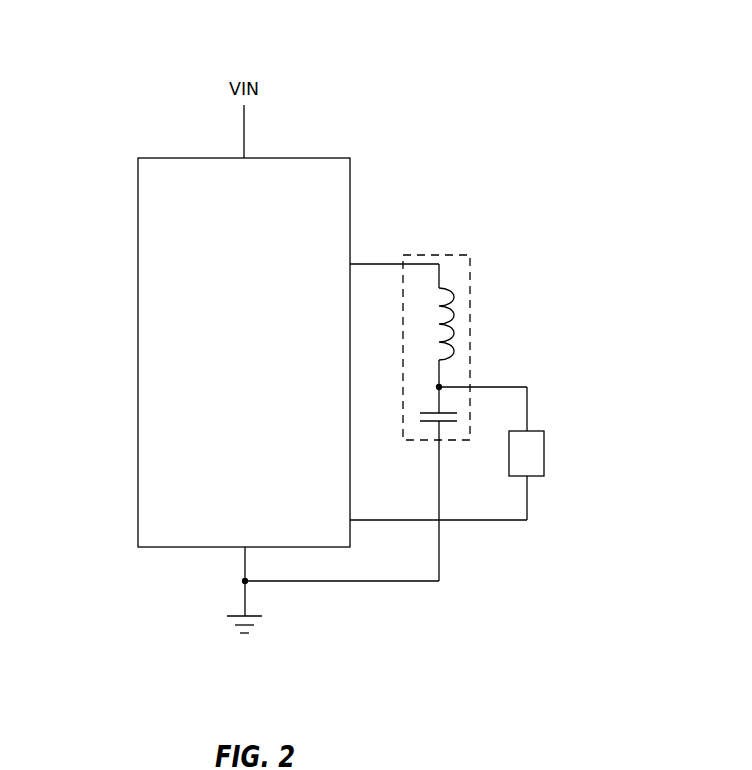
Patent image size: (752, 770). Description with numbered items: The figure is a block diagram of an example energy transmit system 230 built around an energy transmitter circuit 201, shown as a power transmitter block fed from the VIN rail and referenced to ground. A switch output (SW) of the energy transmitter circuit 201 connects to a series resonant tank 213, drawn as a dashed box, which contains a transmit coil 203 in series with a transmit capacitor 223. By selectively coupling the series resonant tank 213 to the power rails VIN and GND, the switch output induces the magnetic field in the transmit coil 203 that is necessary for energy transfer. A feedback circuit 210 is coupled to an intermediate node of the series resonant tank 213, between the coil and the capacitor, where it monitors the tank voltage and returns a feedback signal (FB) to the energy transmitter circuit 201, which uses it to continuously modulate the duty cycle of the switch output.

The energy transmit system 230 is at (284, 40).
The energy transmitter circuit 201 is at (137, 210).
The series resonant tank 213 is at (469, 335).
The transmit coil 203 is at (457, 316).
The transmit capacitor 223 is at (424, 422).
The feedback circuit 210 is at (546, 457).